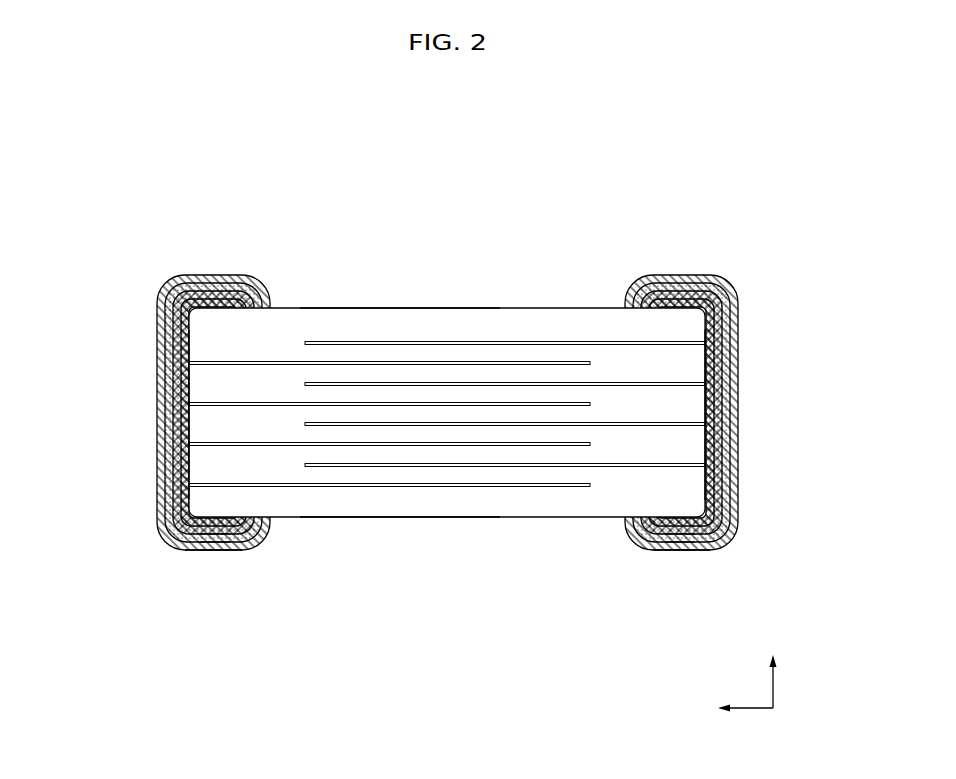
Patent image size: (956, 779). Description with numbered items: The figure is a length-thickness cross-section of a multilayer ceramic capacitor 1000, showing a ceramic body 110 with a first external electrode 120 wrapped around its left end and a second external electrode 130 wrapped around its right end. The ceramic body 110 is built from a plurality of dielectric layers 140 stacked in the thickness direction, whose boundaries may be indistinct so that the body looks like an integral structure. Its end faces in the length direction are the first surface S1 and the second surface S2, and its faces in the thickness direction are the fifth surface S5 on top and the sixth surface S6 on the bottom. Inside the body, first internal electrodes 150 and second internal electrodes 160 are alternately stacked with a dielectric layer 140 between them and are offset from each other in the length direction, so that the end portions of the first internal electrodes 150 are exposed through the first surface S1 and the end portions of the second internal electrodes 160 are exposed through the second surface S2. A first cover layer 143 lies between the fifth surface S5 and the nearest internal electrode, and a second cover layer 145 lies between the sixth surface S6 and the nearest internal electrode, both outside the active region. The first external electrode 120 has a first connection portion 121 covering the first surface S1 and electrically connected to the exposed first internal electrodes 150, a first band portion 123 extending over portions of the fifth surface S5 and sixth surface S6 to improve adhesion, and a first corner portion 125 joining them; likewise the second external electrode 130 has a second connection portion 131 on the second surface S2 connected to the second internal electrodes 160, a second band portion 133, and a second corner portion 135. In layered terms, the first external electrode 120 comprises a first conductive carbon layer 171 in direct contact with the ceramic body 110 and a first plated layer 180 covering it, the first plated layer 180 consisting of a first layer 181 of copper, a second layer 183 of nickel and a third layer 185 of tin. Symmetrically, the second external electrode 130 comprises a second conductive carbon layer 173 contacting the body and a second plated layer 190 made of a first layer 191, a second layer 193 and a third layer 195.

The multilayer ceramic capacitor 1000 is at (467, 197).
The ceramic body 110 is at (477, 287).
The first external electrode 120 is at (312, 756).
The first connection portion 121 is at (158, 422).
The first band portion 123 is at (218, 276).
The first corner portion 125 is at (167, 284).
The second external electrode 130 is at (424, 756).
The second connection portion 131 is at (738, 420).
The second band portion 133 is at (676, 276).
The second corner portion 135 is at (728, 284).
The dielectric layer 140 is at (543, 474).
The first cover layer 143 is at (346, 308).
The second cover layer 145 is at (346, 508).
The first internal electrode 150 is at (447, 487).
The second internal electrode 160 is at (494, 467).
The first conductive carbon layer 171 is at (180, 468).
The second conductive carbon layer 173 is at (713, 474).
The first plated layer 180 is at (263, 603).
The first layer 181 is at (215, 541).
The second layer 183 is at (190, 548).
The third layer 185 is at (243, 546).
The second plated layer 190 is at (727, 603).
The first layer 191 is at (680, 541).
The second layer 193 is at (705, 548).
The third layer 195 is at (652, 546).
The first surface S1 is at (188, 380).
The second surface S2 is at (708, 361).
The fifth surface S5 is at (400, 308).
The sixth surface S6 is at (397, 518).